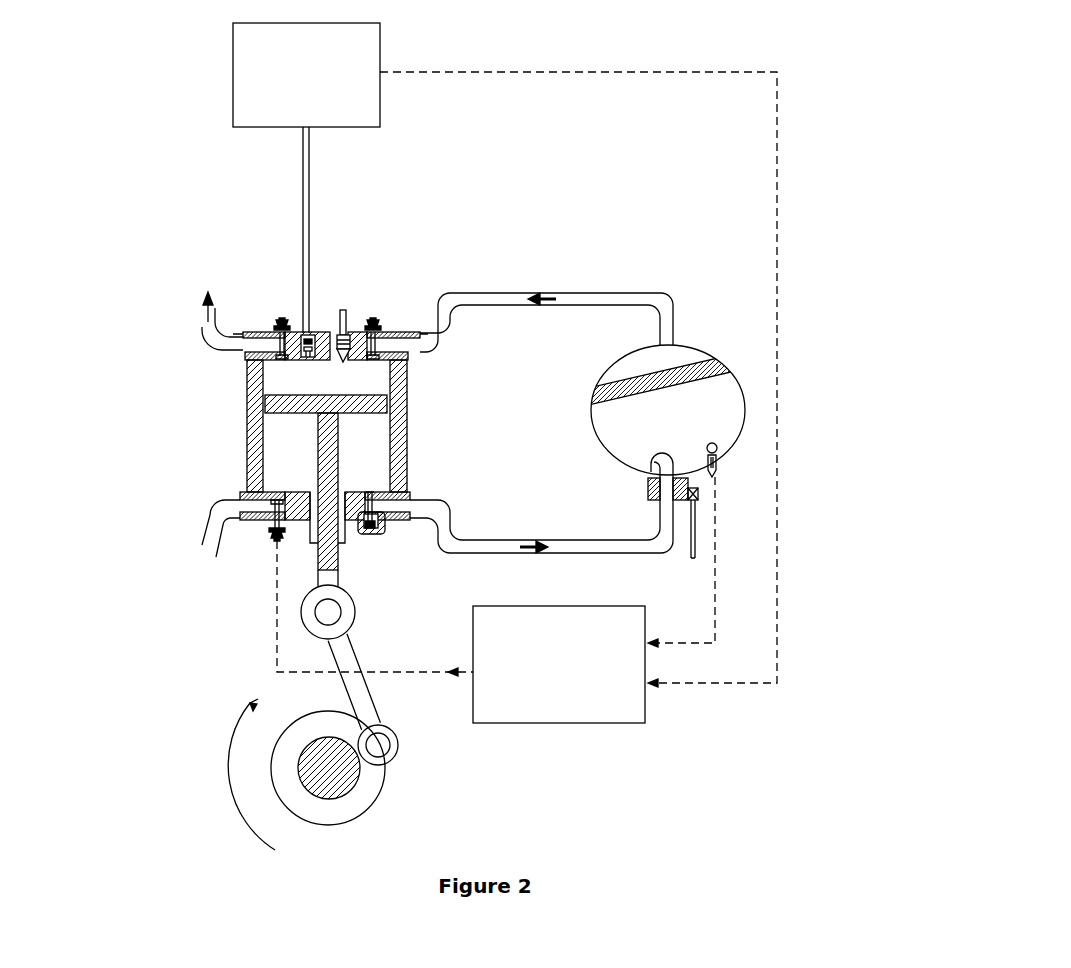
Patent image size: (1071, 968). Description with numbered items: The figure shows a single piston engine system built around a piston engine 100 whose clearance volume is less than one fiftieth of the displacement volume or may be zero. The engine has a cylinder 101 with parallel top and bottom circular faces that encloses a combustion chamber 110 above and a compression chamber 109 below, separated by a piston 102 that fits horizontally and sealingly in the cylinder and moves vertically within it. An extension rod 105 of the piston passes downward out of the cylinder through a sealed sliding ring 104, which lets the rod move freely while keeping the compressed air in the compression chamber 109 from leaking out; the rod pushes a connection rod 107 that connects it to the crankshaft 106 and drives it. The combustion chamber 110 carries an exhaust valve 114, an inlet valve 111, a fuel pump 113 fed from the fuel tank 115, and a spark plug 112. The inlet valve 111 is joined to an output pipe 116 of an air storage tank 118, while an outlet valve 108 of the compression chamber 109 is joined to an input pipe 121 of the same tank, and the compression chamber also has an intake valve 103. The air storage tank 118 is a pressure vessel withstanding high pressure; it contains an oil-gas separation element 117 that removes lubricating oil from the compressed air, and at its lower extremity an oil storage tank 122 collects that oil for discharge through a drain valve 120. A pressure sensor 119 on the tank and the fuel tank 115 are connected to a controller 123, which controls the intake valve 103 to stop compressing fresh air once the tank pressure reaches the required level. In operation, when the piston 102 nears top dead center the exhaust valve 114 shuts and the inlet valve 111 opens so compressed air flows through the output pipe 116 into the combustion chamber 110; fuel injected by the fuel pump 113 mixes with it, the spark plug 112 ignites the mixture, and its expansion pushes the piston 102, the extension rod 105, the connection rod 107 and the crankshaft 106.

The piston engine 100 is at (195, 392).
The cylinder 101 is at (253, 378).
The piston 102 is at (280, 420).
The intake valve 103 is at (267, 532).
The sealed sliding ring 104 is at (313, 530).
The extension rod 105 is at (318, 576).
The crankshaft 106 is at (358, 803).
The connection rod 107 is at (347, 658).
The outlet valve 108 is at (371, 535).
The compression chamber 109 is at (372, 440).
The combustion chamber 110 is at (378, 378).
The inlet valve 111 is at (383, 317).
The spark plug 112 is at (343, 310).
The fuel pump 113 is at (272, 318).
The exhaust valve 114 is at (303, 327).
The fuel tank 115 is at (372, 70).
The output pipe 116 is at (573, 297).
The oil-gas separation element 117 is at (733, 375).
The air storage tank 118 is at (742, 428).
The pressure sensor 119 is at (718, 465).
The drain valve 120 is at (700, 497).
The input pipe 121 is at (572, 545).
The oil storage tank 122 is at (647, 493).
The controller 123 is at (570, 727).